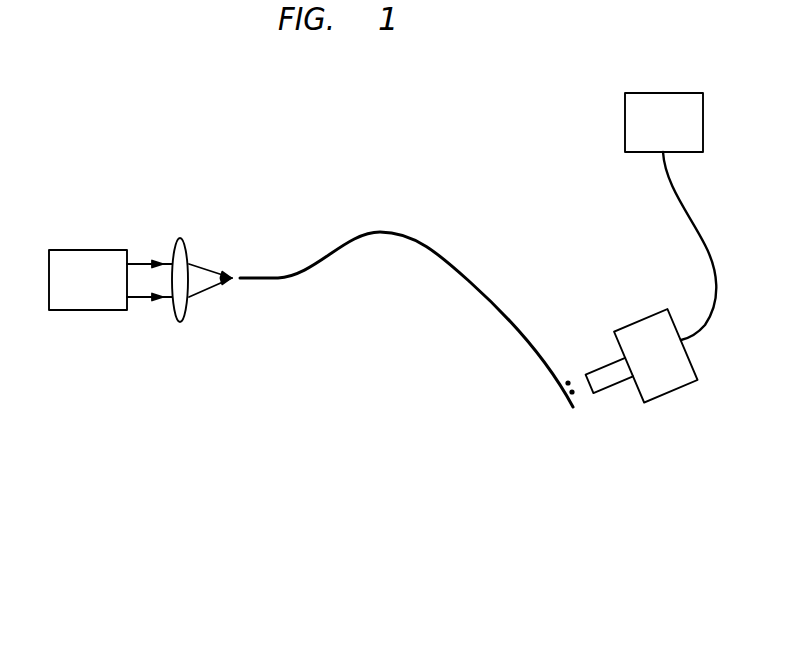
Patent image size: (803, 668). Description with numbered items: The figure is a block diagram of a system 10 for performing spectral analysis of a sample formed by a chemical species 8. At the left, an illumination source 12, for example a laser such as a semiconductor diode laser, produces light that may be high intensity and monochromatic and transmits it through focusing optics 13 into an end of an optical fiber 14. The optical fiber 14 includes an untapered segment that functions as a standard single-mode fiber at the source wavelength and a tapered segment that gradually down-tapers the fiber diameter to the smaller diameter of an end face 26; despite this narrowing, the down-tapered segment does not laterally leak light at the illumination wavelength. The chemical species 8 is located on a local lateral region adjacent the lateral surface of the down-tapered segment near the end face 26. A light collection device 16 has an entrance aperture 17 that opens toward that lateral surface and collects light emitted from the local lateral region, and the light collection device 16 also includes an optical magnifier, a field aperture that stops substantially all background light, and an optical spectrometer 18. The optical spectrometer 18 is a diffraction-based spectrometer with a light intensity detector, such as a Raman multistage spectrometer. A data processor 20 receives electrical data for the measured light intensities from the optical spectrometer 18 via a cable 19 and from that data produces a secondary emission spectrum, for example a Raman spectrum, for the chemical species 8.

The chemical species 8 is at (568, 383).
The system 10 is at (319, 370).
The illumination source 12 is at (77, 290).
The focusing optics 13 is at (180, 237).
The optical fiber 14 is at (413, 236).
The light collection device 16 is at (597, 369).
The entrance aperture 17 is at (596, 391).
The optical spectrometer 18 is at (675, 389).
The cable 19 is at (716, 275).
The data processor 20 is at (675, 135).
The end face 26 is at (570, 413).